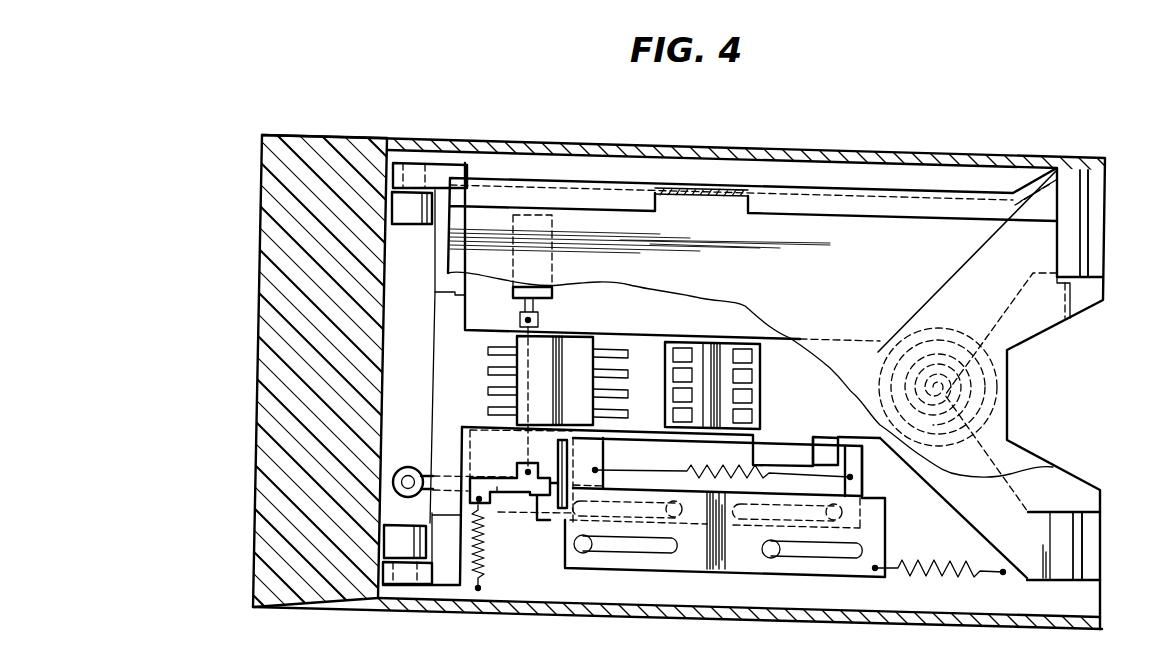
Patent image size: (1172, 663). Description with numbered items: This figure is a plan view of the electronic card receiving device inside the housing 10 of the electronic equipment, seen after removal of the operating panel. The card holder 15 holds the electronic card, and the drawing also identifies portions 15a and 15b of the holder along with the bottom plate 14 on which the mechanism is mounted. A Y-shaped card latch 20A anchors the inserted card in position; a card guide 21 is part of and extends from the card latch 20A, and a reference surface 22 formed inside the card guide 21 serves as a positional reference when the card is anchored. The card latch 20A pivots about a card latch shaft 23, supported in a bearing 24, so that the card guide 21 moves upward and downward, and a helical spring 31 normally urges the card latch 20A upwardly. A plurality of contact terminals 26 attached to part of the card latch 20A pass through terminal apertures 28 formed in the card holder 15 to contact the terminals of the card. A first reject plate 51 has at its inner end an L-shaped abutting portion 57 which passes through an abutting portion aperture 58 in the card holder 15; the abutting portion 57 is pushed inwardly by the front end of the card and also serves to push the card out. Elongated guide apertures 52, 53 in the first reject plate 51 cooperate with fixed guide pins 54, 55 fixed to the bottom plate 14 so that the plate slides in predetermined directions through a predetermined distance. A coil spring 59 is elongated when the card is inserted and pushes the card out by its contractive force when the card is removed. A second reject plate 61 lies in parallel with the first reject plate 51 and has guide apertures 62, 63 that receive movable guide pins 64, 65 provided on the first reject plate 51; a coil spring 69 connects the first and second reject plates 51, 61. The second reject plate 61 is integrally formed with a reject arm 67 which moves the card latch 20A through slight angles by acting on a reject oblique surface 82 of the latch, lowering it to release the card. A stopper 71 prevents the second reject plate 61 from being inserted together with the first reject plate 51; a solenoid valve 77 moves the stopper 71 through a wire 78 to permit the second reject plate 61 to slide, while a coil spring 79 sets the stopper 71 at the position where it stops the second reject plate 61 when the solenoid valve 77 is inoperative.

The housing 10 is at (262, 348).
The bottom plate 14 is at (516, 593).
The card holder 15 is at (785, 196).
The bent portion of circuit board 15a is at (1028, 180).
The notch portion 15b is at (1045, 335).
The card latch 20A is at (481, 382).
The card guide 21 is at (1098, 251).
The reference surface 22 is at (1085, 224).
The card latch shaft 23 is at (413, 168).
The bearing 24 is at (412, 212).
The contact terminal 26 is at (677, 348).
The terminal aperture 28 is at (700, 352).
The helical spring 31 is at (898, 332).
The first reject plate 51 is at (885, 519).
The elongated guide aperture 52 is at (627, 545).
The elongated guide aperture 53 is at (843, 556).
The fixed guide pin 54 is at (584, 553).
The fixed guide pin 55 is at (771, 558).
The abutting portion 57 is at (562, 440).
The abutting portion aperture 58 is at (500, 514).
The coil spring 59 is at (957, 575).
The second reject plate 61 is at (629, 488).
The guide aperture 62 is at (641, 512).
The guide aperture 63 is at (748, 518).
The movable guide pin 64 is at (677, 516).
The movable guide pin 65 is at (831, 519).
The reject arm 67 is at (862, 460).
The coil spring 69 is at (690, 470).
The stopper 71 is at (497, 487).
The solenoid valve 77 is at (534, 215).
The wire 78 is at (525, 452).
The coil spring 79 is at (481, 562).
The reject oblique surface 82 is at (820, 453).